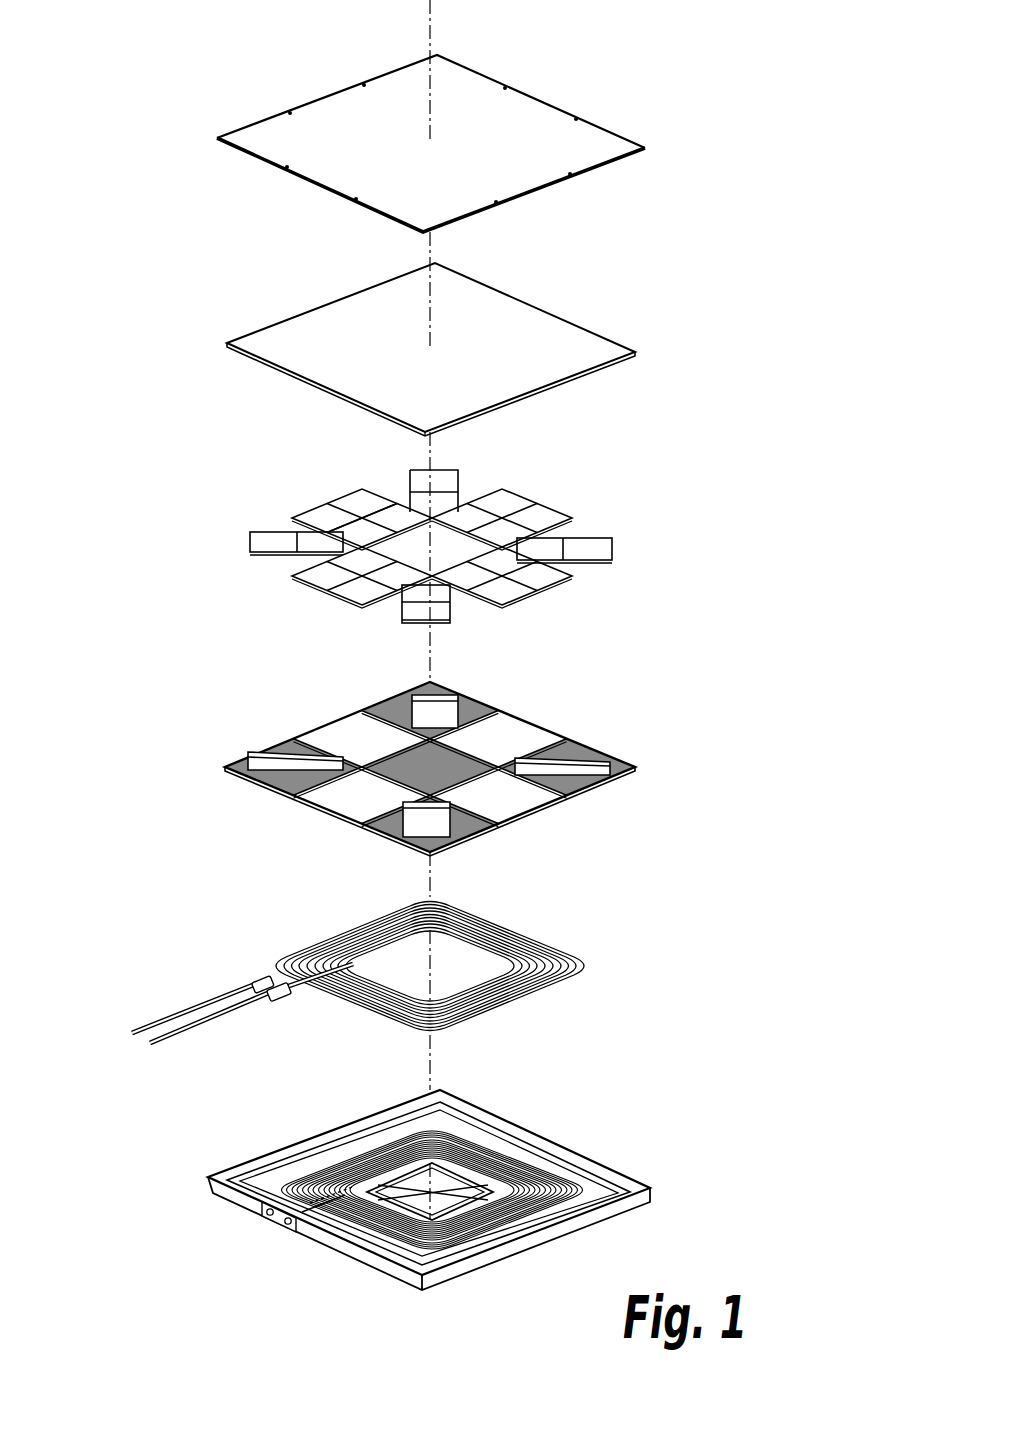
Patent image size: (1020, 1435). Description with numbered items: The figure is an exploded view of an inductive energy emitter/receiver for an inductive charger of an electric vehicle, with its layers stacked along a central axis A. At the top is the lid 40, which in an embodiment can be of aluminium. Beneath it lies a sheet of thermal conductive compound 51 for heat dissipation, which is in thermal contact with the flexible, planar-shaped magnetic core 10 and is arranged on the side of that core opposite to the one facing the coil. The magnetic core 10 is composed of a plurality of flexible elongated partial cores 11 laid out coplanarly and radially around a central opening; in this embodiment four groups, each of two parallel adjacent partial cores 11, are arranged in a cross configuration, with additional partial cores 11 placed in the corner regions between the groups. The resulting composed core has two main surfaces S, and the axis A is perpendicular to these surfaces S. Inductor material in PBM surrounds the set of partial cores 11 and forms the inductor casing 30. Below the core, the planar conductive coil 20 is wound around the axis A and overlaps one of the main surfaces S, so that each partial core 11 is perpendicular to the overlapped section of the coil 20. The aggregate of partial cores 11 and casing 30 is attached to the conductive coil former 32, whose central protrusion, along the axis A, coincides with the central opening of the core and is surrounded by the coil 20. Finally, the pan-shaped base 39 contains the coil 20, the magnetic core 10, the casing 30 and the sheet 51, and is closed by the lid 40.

The central axis A is at (428, 32).
The lid 40 is at (268, 130).
The sheet of thermal conductive compound 51 is at (275, 336).
The magnetic core 10 is at (222, 582).
The elongated partial cores 11 is at (362, 500).
The main surfaces S is at (378, 497).
The inductor casing 30 is at (272, 738).
The conductive coil 20 is at (265, 955).
The conductive coil former 32 is at (260, 1157).
The pan-shaped base 39 is at (247, 1203).